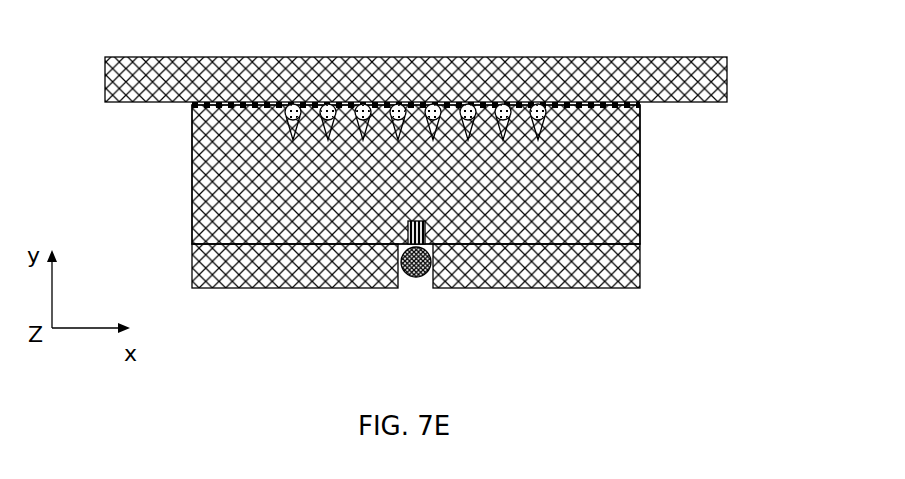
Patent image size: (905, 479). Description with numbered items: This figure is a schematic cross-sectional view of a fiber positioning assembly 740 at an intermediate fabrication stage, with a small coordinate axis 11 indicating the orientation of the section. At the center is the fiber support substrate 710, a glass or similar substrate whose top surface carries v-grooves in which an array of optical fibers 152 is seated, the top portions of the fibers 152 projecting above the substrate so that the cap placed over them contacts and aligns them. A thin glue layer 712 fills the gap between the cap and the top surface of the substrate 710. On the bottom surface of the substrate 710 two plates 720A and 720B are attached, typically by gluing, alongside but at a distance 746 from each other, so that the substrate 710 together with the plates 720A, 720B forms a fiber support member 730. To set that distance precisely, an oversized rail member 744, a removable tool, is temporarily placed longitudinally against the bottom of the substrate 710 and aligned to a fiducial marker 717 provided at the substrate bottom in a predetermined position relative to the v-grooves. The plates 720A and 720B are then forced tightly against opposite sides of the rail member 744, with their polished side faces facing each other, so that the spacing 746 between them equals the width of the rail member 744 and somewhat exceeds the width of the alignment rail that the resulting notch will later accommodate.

The coordinate system / device reference 11 is at (65, 358).
The optical fibers 152 is at (344, 147).
The fiber support substrate 710 is at (416, 174).
The glue layer 712 is at (643, 103).
The fiducial marker 717 is at (427, 231).
The plate 720A is at (295, 266).
The plate 720B is at (536, 266).
The fiber support member 730 is at (125, 110).
The fiber positioning assembly 740 is at (746, 57).
The oversized rail member 744 is at (424, 274).
The spacing 746 is at (433, 314).